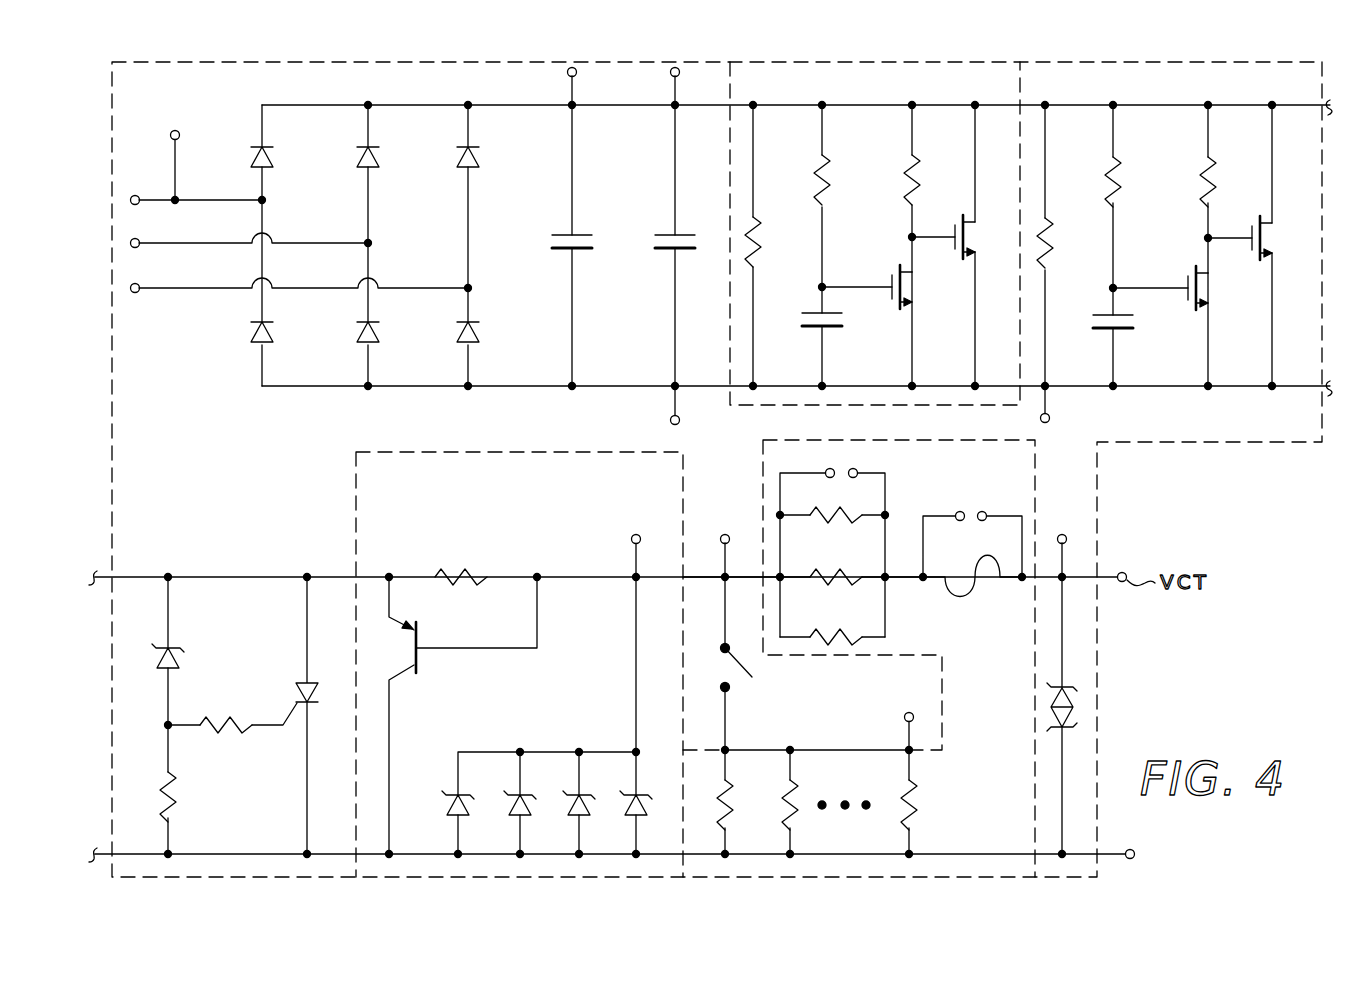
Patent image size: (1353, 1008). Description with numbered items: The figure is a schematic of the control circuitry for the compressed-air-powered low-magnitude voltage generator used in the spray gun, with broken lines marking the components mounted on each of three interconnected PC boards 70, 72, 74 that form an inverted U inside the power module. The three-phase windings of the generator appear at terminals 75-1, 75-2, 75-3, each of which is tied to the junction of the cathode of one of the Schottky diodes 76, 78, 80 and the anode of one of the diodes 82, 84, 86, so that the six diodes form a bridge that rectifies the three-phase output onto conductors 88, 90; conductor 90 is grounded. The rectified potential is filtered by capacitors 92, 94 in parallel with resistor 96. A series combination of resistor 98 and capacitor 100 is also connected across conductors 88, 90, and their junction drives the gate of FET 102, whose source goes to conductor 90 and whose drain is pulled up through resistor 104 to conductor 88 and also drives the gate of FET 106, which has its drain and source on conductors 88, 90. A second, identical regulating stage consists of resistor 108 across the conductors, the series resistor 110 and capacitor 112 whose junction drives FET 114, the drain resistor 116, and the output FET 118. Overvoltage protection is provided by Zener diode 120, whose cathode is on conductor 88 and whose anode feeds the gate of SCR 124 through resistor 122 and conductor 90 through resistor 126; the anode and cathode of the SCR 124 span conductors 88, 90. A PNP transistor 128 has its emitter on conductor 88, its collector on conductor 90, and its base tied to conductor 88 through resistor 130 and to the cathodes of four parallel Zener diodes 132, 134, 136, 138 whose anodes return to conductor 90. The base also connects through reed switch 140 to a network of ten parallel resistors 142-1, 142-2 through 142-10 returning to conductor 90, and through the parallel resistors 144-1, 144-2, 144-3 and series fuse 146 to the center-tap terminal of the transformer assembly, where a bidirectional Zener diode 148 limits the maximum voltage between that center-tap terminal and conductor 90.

The PC board 70 is at (494, 62).
The PC board 72 is at (975, 877).
The PC board 74 is at (686, 496).
The terminal 75-1 is at (137, 194).
The terminal 75-2 is at (152, 243).
The terminal 75-3 is at (148, 288).
The diode 76 is at (251, 333).
The diode 78 is at (358, 333).
The diode 80 is at (457, 333).
The diode 82 is at (250, 157).
The diode 84 is at (356, 157).
The diode 86 is at (456, 157).
The conductor 88 is at (643, 105).
The conductor 90 is at (636, 385).
The capacitor 92 is at (562, 233).
The capacitor 94 is at (665, 233).
The resistor 96 is at (762, 237).
The resistor 98 is at (816, 166).
The capacitor 100 is at (828, 330).
The FET 102 is at (912, 297).
The resistor 104 is at (906, 178).
The FET 106 is at (970, 237).
The resistor 108 is at (1053, 245).
The resistor 110 is at (1104, 176).
The capacitor 112 is at (1125, 330).
The FET 114 is at (1212, 297).
The resistor 116 is at (1200, 175).
The FET 118 is at (1272, 237).
The Zener diode 120 is at (180, 666).
The resistor 122 is at (235, 733).
The SCR 124 is at (298, 698).
The resistor 126 is at (180, 797).
The bipolar PNP transistor 128 is at (420, 662).
The resistor 130 is at (449, 585).
The Zener diode 132 is at (451, 805).
The Zener diode 134 is at (511, 805).
The Zener diode 136 is at (570, 806).
The Zener diode 138 is at (627, 806).
The switch 140 is at (738, 687).
The resistor 142-1 is at (738, 797).
The resistor 142-2 is at (805, 795).
The resistor 142-10 is at (920, 788).
The resistor 144-1 is at (858, 496).
The resistor 144-2 is at (858, 556).
The resistor 144-3 is at (858, 617).
The fuse 146 is at (975, 590).
The bidirectional Zener diode 148 is at (1075, 700).